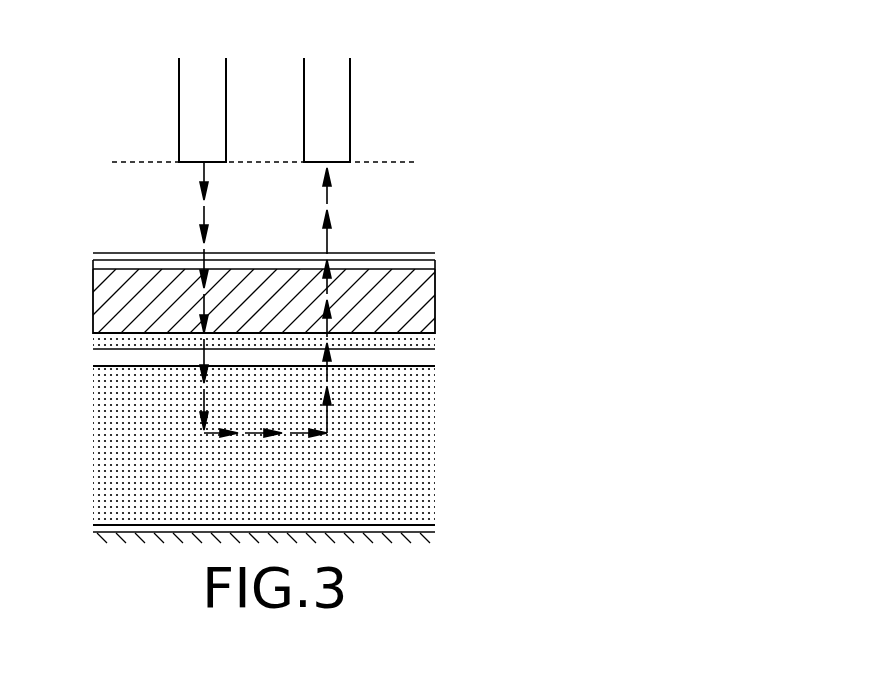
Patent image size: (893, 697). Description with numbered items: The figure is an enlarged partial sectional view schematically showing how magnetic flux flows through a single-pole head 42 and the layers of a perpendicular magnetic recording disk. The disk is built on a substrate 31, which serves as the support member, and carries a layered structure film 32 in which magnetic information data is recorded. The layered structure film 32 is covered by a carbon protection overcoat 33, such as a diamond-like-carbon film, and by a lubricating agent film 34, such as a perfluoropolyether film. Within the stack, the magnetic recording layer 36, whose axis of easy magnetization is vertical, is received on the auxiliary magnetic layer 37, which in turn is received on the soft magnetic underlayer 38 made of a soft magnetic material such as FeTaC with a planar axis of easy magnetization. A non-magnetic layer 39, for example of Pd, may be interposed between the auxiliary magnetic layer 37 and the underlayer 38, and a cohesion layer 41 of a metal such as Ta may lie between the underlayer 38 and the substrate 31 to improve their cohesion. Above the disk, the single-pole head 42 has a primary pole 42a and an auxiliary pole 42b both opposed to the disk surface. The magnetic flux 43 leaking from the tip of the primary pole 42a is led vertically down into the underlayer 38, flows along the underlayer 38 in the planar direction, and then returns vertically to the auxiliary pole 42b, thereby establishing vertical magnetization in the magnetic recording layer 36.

The substrate 31 is at (418, 534).
The layered structure film 32 is at (432, 262).
The carbon protection overcoat 33 is at (100, 261).
The lubricating agent film 34 is at (103, 254).
The magnetic recording layer 36 is at (103, 269).
The auxiliary magnetic layer 37 is at (412, 333).
The soft magnetic underlayer 38 is at (103, 366).
The non-magnetic layer 39 is at (412, 351).
The cohesion layer 41 is at (418, 527).
The single-pole head 42 is at (275, 86).
The primary pole 42a is at (179, 133).
The auxiliary pole 42b is at (351, 138).
The magnetic flux 43 is at (204, 219).